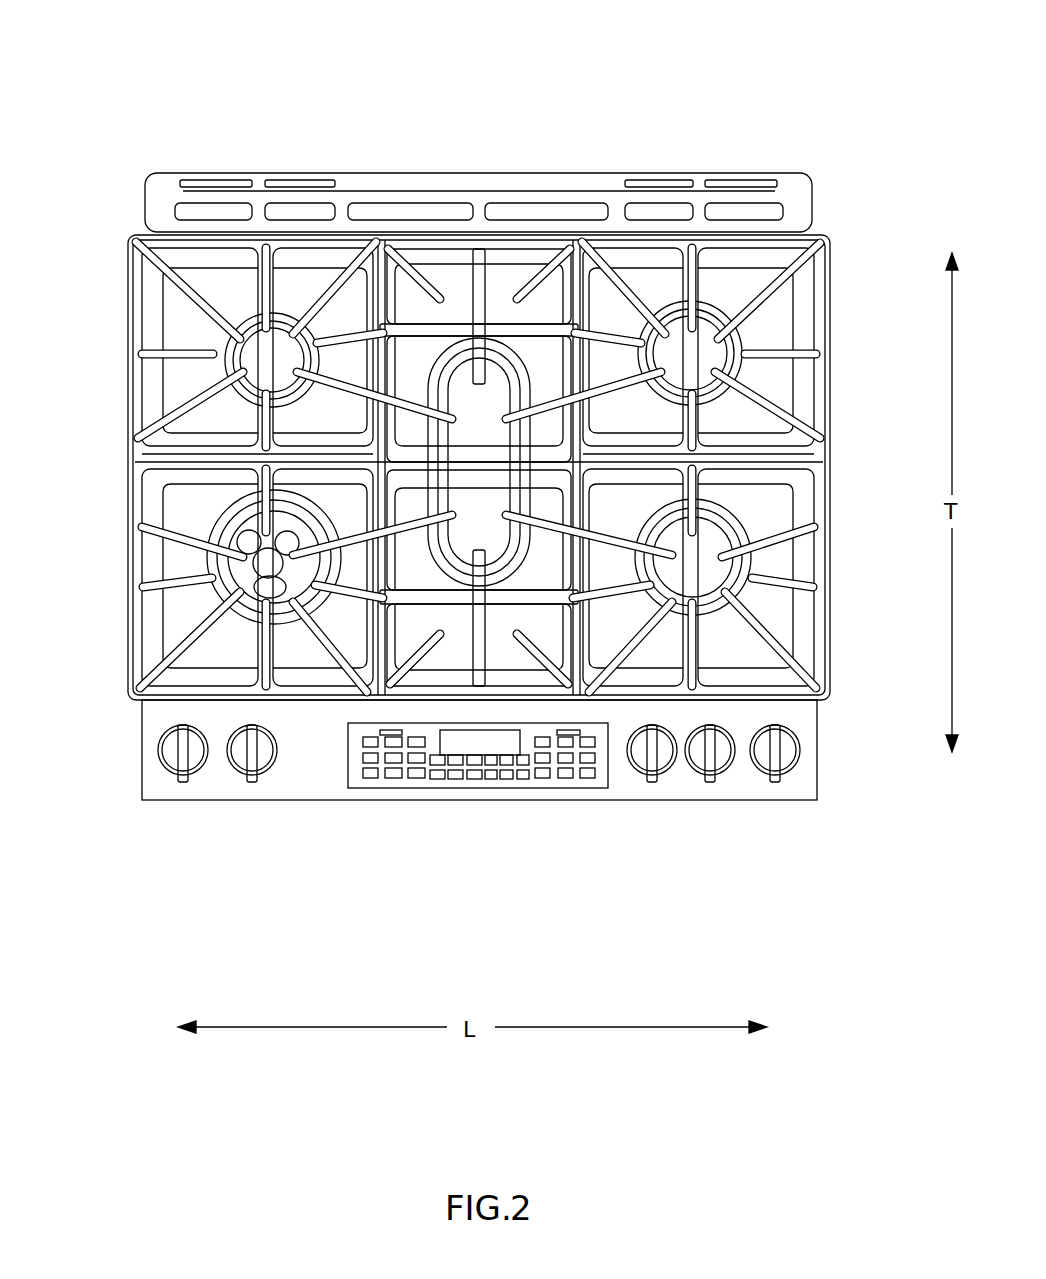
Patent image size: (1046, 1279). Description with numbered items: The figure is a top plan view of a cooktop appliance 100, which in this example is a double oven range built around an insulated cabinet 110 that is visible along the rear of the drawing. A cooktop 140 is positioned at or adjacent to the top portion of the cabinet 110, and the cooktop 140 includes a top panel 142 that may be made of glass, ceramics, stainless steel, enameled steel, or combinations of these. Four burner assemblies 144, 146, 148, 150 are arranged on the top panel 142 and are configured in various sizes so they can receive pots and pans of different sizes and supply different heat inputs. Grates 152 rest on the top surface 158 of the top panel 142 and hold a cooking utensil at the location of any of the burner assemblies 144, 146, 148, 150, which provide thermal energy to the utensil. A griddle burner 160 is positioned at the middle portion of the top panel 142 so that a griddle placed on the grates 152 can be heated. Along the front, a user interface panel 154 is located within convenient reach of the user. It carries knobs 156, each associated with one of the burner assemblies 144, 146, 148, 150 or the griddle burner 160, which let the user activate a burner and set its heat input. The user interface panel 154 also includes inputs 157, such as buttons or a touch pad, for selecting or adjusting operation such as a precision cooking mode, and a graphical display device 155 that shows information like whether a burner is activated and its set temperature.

The cooktop appliance 100 is at (165, 105).
The insulated cabinet 110 is at (542, 182).
The cooktop 140 is at (830, 222).
The top panel 142 is at (802, 617).
The burner assembly 144 is at (245, 357).
The burner assembly 146 is at (248, 530).
The burner assembly 148 is at (700, 345).
The burner assembly 150 is at (712, 547).
The grates 152 is at (150, 582).
The user interface panel 154 is at (415, 787).
The graphical display device 155 is at (453, 758).
The knobs 156 is at (230, 765).
The inputs 157 is at (392, 780).
The top surface 158 is at (172, 624).
The griddle burner 160 is at (487, 396).